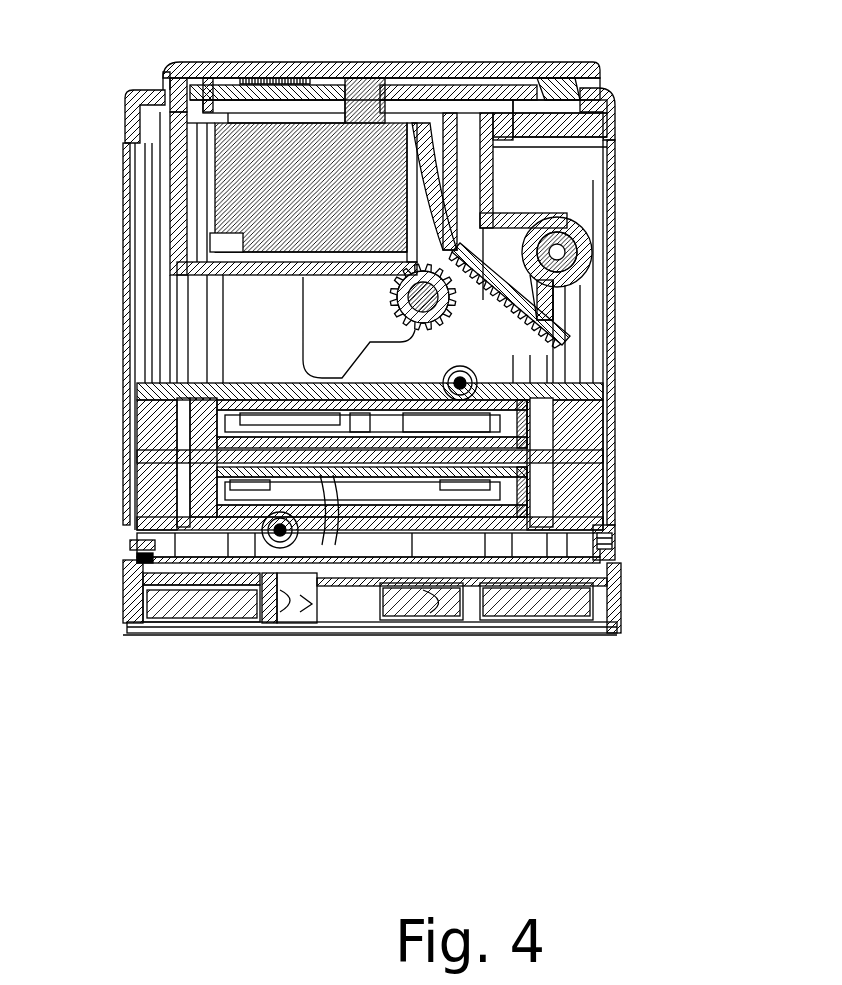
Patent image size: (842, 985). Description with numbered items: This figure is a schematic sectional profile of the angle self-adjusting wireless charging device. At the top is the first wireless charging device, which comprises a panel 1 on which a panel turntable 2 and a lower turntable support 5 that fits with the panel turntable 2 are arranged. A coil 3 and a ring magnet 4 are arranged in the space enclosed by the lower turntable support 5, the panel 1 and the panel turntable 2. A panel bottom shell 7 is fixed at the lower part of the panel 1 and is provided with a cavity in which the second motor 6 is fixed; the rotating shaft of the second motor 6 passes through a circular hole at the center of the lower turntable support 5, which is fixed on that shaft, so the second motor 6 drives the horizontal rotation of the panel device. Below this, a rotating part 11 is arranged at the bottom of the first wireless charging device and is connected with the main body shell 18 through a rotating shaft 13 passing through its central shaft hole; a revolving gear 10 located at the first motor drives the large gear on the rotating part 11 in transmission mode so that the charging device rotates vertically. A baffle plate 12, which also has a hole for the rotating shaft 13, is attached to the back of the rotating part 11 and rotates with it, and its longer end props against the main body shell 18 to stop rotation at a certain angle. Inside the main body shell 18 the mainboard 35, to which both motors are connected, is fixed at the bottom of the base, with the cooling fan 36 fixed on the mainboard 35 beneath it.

The panel 1 is at (605, 92).
The panel turntable 2 is at (163, 72).
The coil 3 is at (478, 72).
The ring magnet 4 is at (210, 78).
The lower turntable support 5 is at (538, 95).
The second motor 6 is at (250, 201).
The panel bottom shell 7 is at (243, 137).
The revolving gear 10 is at (447, 317).
The rotating part 11 is at (520, 310).
The baffle plate 12 is at (487, 197).
The rotating shaft 13 is at (573, 243).
The main body shell 18 is at (603, 417).
The mainboard 35 is at (567, 568).
The cooling fan 36 is at (390, 615).